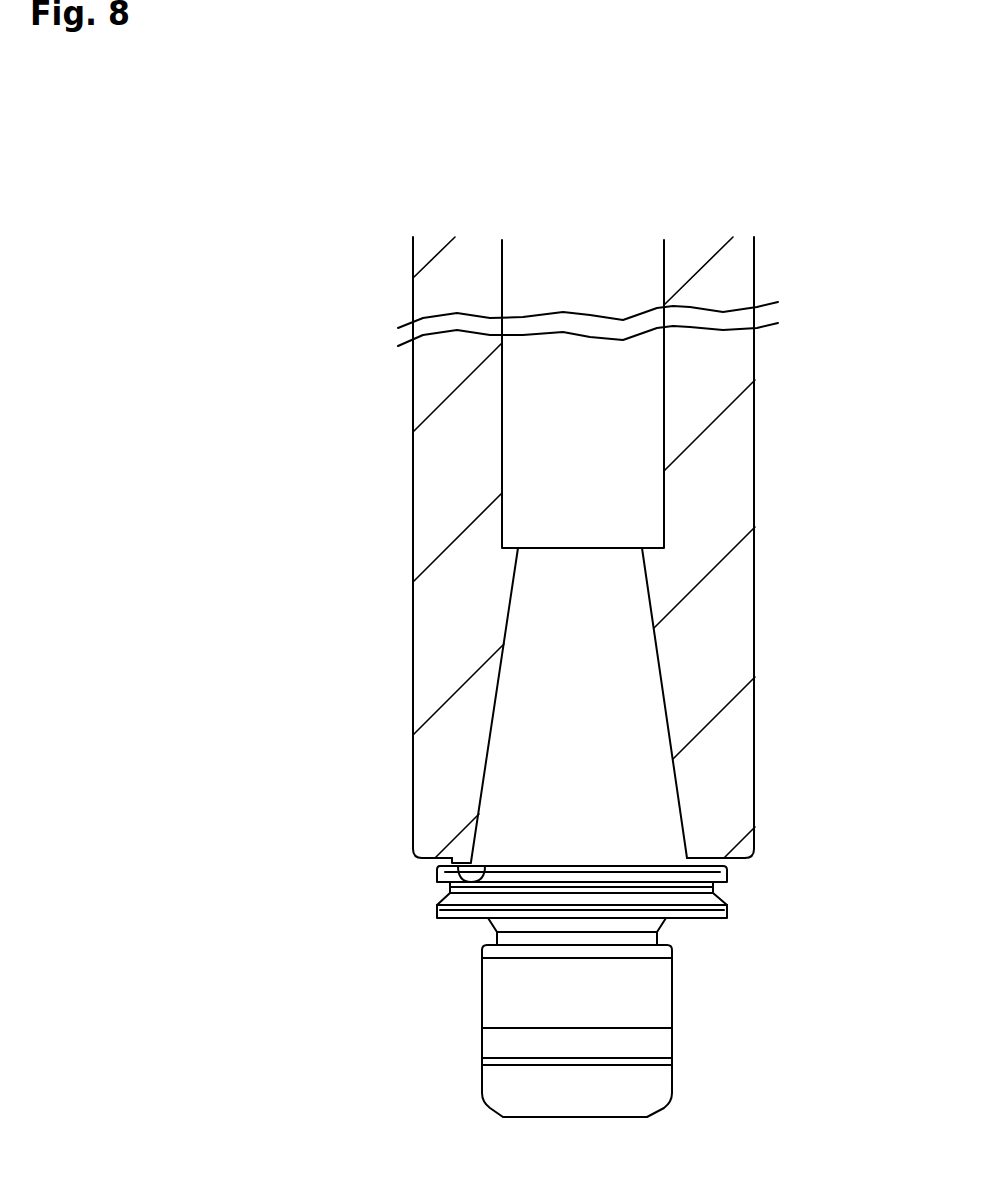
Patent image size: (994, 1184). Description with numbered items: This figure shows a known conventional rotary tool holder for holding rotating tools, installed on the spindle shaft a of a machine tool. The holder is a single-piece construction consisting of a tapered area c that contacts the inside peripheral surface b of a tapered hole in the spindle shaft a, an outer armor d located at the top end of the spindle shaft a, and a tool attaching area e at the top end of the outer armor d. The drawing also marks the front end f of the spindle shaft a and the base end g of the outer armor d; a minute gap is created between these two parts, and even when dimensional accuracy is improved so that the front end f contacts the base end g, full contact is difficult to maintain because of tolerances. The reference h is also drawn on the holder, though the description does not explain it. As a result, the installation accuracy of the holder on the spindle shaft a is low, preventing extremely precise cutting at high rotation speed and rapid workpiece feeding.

The spindle shaft a is at (755, 457).
The inside peripheral surface b is at (498, 707).
The tapered area c is at (658, 668).
The outer armor d is at (713, 893).
The tool attaching area e is at (672, 993).
The front end f is at (492, 873).
The base end g is at (442, 862).
The upper ridge h is at (717, 865).